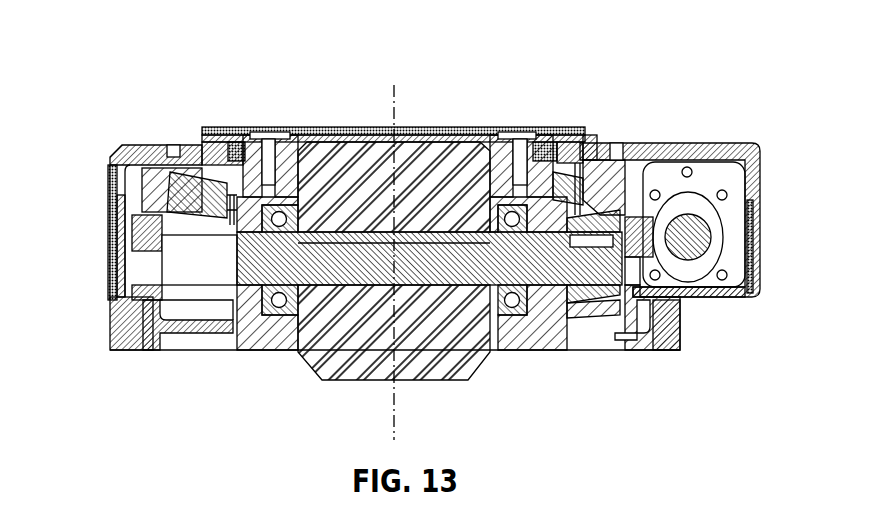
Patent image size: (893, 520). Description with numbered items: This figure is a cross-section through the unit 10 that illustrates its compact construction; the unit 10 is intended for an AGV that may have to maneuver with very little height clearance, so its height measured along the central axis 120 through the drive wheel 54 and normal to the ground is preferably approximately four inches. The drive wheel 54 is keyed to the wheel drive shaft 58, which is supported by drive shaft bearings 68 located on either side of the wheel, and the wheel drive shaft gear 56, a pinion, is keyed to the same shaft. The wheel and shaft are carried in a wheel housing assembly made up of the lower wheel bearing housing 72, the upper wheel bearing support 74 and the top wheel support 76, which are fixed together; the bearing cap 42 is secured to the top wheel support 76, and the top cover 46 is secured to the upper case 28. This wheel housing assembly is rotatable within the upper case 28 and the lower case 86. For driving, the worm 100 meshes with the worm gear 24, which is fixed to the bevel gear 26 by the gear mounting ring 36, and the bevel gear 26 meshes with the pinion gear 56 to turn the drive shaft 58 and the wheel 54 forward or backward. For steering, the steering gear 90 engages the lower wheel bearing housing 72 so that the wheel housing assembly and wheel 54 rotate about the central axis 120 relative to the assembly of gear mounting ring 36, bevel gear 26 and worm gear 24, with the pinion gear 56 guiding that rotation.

The unit 10 is at (114, 78).
The worm gear 24 is at (110, 255).
The bevel gear 26 is at (598, 145).
The upper case 28 is at (683, 145).
The gear mounting ring 36 is at (664, 145).
The bearing cap 42 is at (383, 127).
The top cover 46 is at (478, 127).
The drive wheel 54 is at (332, 380).
The wheel drive shaft gear 56 is at (570, 350).
The wheel drive shaft 58 is at (405, 272).
The drive shaft bearing 68 is at (262, 350).
The lower wheel bearing housing 72 is at (243, 297).
The upper wheel bearing support 74 is at (233, 240).
The top wheel support 76 is at (297, 127).
The lower case 86 is at (706, 298).
The steering gear 90 is at (680, 330).
The worm 100 is at (706, 145).
The central axis 120 is at (398, 100).